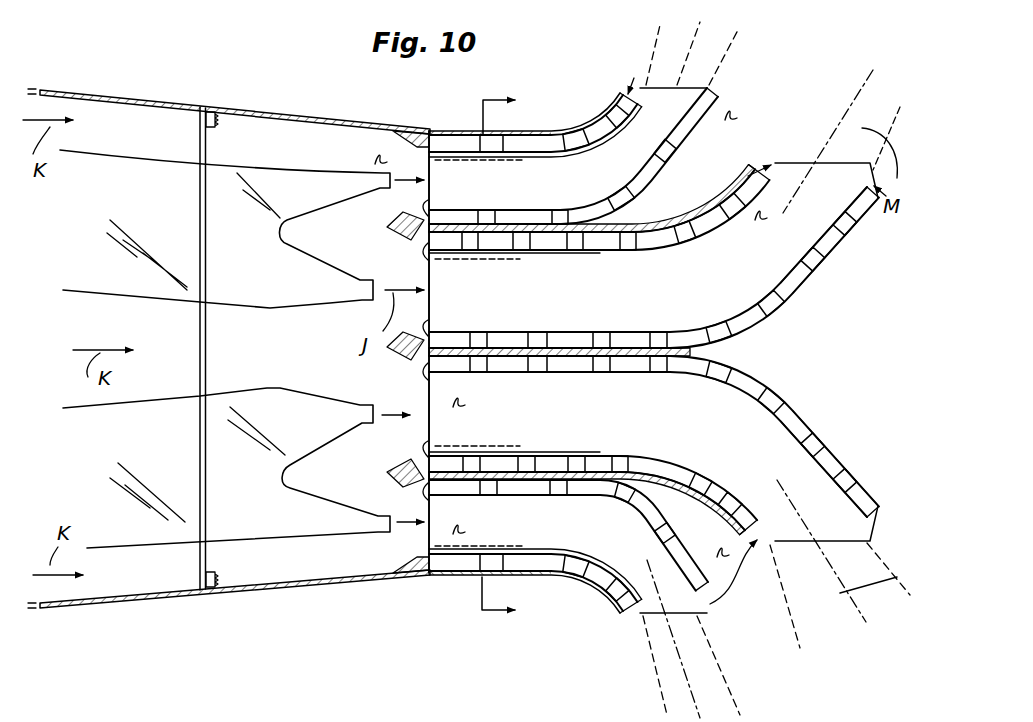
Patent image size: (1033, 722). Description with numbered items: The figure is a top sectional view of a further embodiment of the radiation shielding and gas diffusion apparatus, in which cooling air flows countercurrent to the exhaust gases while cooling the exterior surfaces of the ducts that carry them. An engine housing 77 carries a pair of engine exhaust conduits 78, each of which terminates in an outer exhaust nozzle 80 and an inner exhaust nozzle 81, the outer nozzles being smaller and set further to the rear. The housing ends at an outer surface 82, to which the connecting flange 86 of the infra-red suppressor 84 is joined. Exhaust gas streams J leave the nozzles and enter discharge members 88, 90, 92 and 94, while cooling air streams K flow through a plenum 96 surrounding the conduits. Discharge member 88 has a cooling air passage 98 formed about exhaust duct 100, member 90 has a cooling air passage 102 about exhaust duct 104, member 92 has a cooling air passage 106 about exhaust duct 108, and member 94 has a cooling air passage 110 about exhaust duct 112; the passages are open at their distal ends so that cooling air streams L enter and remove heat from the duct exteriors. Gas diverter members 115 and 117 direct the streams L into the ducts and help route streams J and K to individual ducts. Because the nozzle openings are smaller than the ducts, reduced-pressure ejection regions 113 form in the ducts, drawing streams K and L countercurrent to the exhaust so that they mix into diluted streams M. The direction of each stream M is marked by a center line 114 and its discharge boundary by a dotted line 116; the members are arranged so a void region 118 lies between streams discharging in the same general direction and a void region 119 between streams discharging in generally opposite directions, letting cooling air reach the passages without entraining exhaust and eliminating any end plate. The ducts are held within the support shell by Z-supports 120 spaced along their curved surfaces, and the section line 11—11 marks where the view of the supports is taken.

The section line 11— 11 is at (519, 356).
The engine housing 77 is at (85, 93).
The engine exhaust conduit 78 is at (126, 152).
The outer exhaust nozzle 80 is at (360, 170).
The inner exhaust nozzle 81 is at (361, 303).
The outer surface 82 is at (198, 560).
The infra-red suppressor 84 is at (294, 112).
The connecting flange 86 is at (215, 578).
The discharge member 88 is at (594, 103).
The discharge member 90 is at (810, 293).
The discharge member 92 is at (814, 410).
The discharge member 94 is at (588, 597).
The plenum 96 is at (92, 587).
The cooling air passage 98 is at (760, 160).
The exhaust duct 100 is at (707, 100).
The cooling air passage 102 is at (832, 250).
The exhaust duct 104 is at (742, 275).
The cooling air passage 106 is at (817, 440).
The exhaust duct 108 is at (805, 480).
The cooling air passage 110 is at (680, 510).
The exhaust duct 112 is at (650, 643).
The ejection region 113 is at (440, 183).
The center line 114 is at (835, 132).
The gas diverter member 115 is at (445, 565).
The dotted line 116 is at (798, 642).
The gas diverter member 117 is at (385, 228).
The void region 118 is at (753, 64).
The void region 119 is at (835, 353).
The Z-support 120 is at (633, 300).